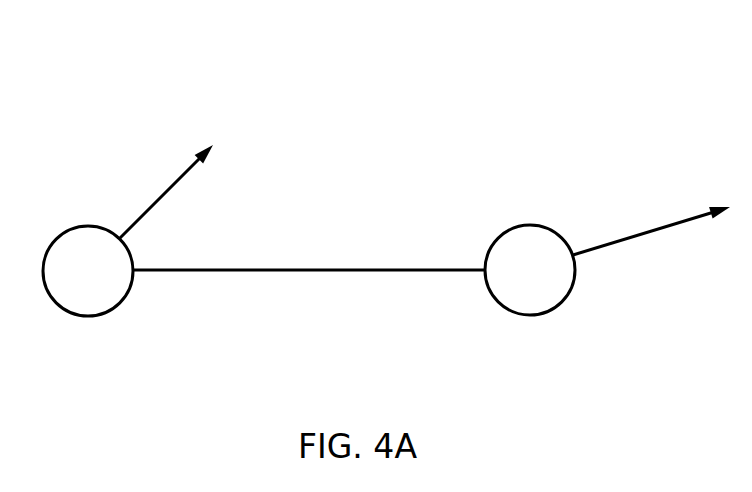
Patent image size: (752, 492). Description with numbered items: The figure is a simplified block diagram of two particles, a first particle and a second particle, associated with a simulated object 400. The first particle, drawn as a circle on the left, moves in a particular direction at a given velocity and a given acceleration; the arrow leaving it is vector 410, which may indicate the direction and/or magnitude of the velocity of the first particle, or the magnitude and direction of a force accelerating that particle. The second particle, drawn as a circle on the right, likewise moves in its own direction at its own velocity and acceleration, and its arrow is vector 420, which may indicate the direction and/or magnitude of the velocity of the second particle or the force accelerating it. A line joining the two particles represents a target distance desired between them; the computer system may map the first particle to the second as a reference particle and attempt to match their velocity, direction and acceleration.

The simulated object 400 is at (362, 105).
The vector 410 is at (168, 190).
The vector 420 is at (641, 234).